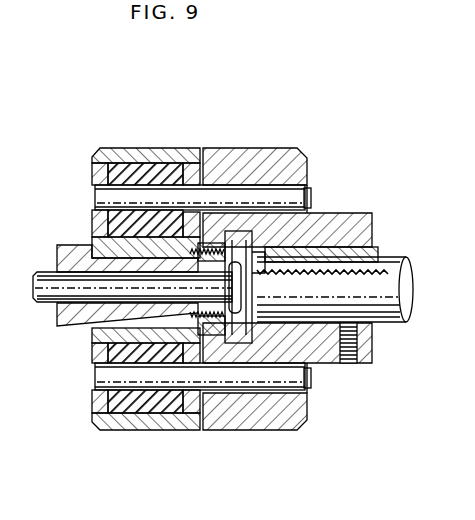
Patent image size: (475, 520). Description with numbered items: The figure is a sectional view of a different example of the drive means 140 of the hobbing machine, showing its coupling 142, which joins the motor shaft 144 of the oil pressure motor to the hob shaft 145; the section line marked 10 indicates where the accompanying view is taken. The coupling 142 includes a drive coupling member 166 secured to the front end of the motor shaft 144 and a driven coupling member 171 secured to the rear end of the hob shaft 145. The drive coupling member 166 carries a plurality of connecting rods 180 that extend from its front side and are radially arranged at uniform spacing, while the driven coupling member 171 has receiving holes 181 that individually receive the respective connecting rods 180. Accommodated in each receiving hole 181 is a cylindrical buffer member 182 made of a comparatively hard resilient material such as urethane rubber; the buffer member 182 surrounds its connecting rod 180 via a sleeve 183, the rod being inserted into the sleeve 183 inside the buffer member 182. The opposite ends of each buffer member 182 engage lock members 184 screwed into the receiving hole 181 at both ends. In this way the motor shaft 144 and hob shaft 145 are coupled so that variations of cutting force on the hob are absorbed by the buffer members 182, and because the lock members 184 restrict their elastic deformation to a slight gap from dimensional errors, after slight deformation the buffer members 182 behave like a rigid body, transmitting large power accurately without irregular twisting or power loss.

The section line 10 is at (138, 140).
The drive means 140 is at (287, 183).
The coupling 142 is at (268, 157).
The motor shaft 144 is at (402, 274).
The hob shaft 145 is at (63, 264).
The drive coupling member 166 is at (254, 422).
The driven coupling member 171 is at (125, 425).
The connecting rod 180 is at (300, 197).
The receiving hole 181 is at (146, 291).
The buffer member 182 is at (110, 168).
The sleeve 183 is at (108, 192).
The lock member 184 is at (193, 163).